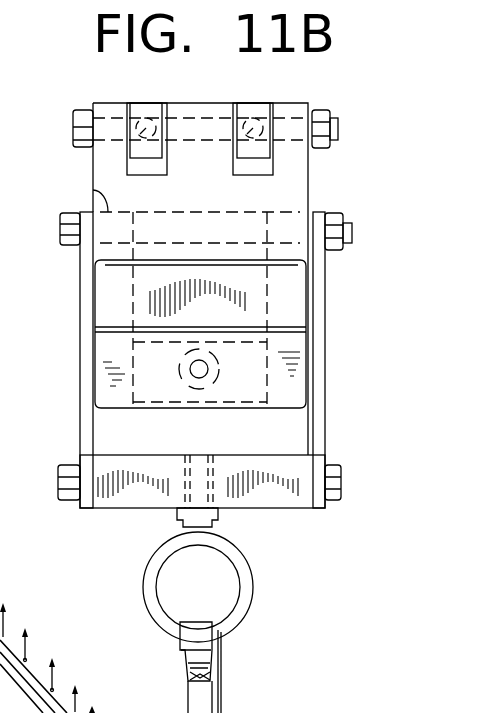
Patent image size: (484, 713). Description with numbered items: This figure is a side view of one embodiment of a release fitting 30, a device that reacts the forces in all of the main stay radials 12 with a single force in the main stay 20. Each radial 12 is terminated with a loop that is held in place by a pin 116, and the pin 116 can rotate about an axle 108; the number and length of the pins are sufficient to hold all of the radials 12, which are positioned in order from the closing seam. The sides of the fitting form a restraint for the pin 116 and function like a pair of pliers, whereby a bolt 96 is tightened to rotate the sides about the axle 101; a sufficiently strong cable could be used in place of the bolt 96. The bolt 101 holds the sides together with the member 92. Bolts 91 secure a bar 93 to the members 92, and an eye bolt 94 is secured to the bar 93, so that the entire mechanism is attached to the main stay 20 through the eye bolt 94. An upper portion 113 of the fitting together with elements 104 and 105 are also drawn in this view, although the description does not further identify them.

The release fitting 30 is at (334, 346).
The upper bracket portion 113 is at (298, 118).
The pin 116 is at (246, 127).
The axle 108 is at (338, 132).
The flange 104 is at (93, 190).
The cross member 105 is at (280, 220).
The bolt 96 is at (189, 369).
The member 92 is at (83, 405).
The bolt 101 is at (347, 250).
The bar 93 is at (248, 508).
The bolts 91 is at (55, 482).
The eye bolt 94 is at (143, 575).
The main stay 20 is at (222, 690).
The main stay radials 12 is at (27, 645).